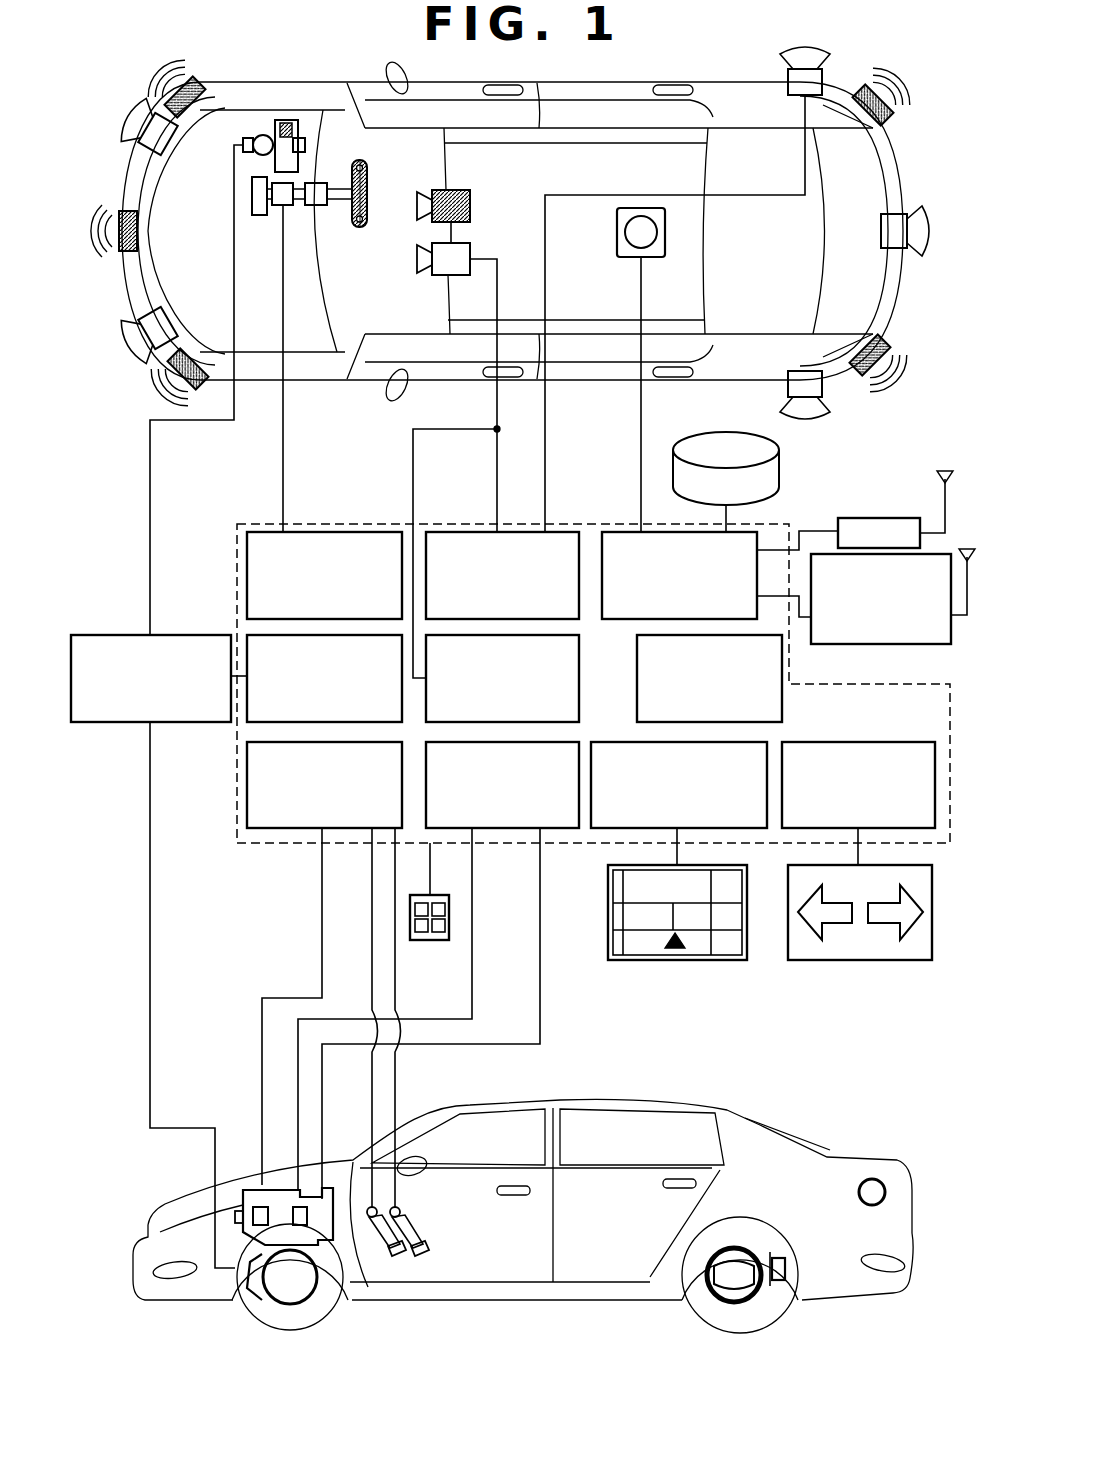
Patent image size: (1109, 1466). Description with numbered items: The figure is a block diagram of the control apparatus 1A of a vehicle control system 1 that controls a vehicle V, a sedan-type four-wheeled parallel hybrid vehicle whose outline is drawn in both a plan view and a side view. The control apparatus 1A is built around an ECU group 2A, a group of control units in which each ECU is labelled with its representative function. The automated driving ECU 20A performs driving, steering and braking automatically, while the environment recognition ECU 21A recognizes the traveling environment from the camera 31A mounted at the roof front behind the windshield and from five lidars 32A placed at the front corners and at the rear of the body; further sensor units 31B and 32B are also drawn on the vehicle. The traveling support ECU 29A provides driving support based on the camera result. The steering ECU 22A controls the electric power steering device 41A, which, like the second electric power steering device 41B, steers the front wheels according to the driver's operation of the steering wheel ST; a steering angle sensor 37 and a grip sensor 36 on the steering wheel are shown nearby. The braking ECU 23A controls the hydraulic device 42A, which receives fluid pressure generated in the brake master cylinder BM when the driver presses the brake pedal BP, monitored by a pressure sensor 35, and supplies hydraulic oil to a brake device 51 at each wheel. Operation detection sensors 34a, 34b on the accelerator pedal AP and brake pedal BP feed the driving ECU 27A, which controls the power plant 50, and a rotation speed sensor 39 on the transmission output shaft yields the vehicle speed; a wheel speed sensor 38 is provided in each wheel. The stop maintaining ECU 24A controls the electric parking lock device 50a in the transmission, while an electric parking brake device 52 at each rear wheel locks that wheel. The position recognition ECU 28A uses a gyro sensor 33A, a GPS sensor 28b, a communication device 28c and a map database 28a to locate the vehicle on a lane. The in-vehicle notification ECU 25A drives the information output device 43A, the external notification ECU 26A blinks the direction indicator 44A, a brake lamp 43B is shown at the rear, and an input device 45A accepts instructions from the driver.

The vehicle control system 1 is at (537, 679).
The control apparatus 1A is at (893, 545).
The ECU group 2A is at (370, 524).
The vehicle V is at (916, 131).
The automated driving ECU 20A is at (789, 672).
The environment recognition ECU 21A is at (573, 531).
The steering ECU 22A is at (325, 532).
The braking ECU 23A is at (257, 722).
The stop maintaining ECU 24A is at (287, 843).
The in-vehicle notification control ECU 25A is at (617, 828).
The external notification control ECU 26A is at (893, 742).
The driving ECU 27A is at (510, 843).
The position recognition ECU 28A is at (758, 529).
The database 28a is at (704, 432).
The GPS sensor 28b is at (876, 518).
The communication device 28c is at (897, 644).
The traveling support ECU 29A is at (579, 678).
The camera 31A is at (440, 276).
The camera 31B is at (471, 197).
The lidar 32A is at (165, 156).
The radar sensor 32B is at (203, 82).
The gyro sensor 33A is at (624, 258).
The operation detection sensor 34a is at (368, 1165).
The operation detection sensor 34b is at (401, 1212).
The pressure sensor 35 is at (285, 120).
The sensor 36 is at (368, 170).
The steering angle sensor 37 is at (258, 215).
The wheel speed sensor 38 is at (782, 1285).
The rotation speed sensor 39 is at (293, 1207).
The electric power steering device 41A is at (290, 206).
The electric power steering device 41B is at (315, 183).
The hydraulic device 42A is at (119, 635).
The information output device 43A is at (708, 960).
The information output device 43B is at (870, 1178).
The information output device 44A is at (870, 960).
The input device 45A is at (432, 940).
The power plant 50 is at (325, 1296).
The electric parking lock device 50a is at (250, 1188).
The brake device 51 is at (260, 1294).
The electric parking brake device 52 is at (722, 1303).
The accelerator pedal AP is at (398, 1257).
The brake pedal BP is at (423, 1257).
The brake master cylinder BM is at (263, 135).
The steering wheel ST is at (360, 160).